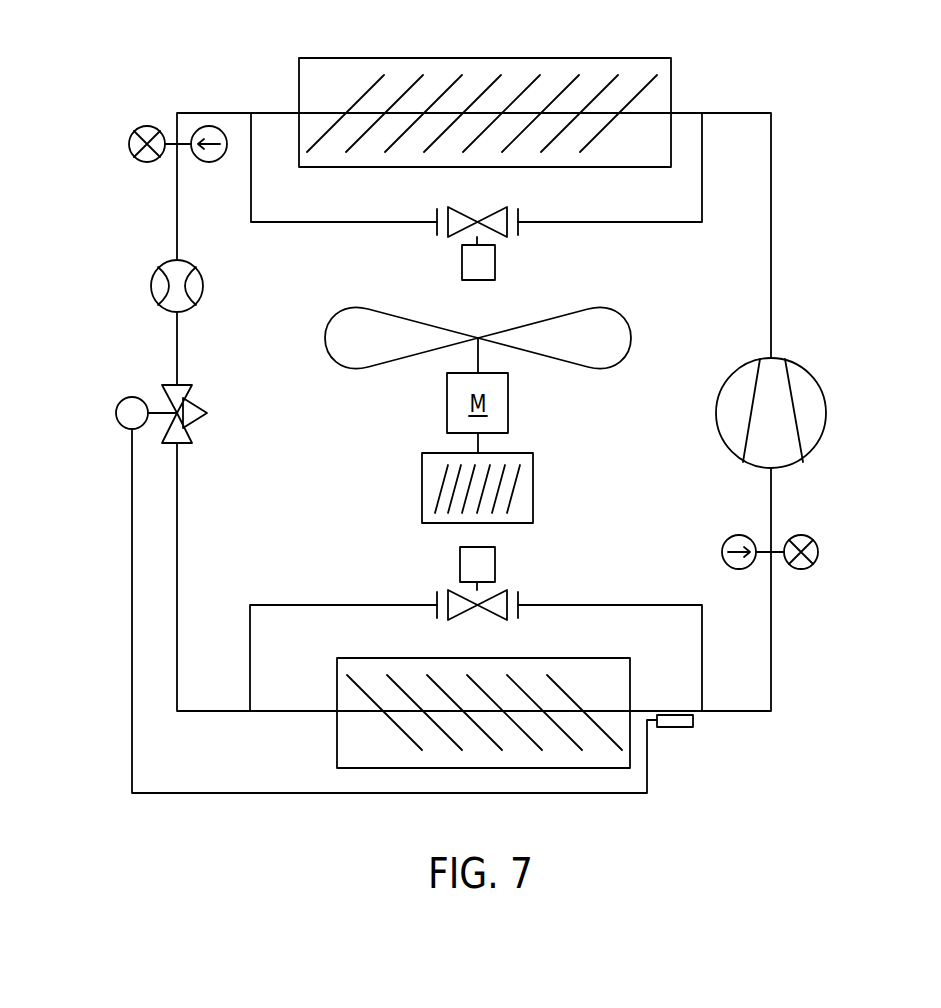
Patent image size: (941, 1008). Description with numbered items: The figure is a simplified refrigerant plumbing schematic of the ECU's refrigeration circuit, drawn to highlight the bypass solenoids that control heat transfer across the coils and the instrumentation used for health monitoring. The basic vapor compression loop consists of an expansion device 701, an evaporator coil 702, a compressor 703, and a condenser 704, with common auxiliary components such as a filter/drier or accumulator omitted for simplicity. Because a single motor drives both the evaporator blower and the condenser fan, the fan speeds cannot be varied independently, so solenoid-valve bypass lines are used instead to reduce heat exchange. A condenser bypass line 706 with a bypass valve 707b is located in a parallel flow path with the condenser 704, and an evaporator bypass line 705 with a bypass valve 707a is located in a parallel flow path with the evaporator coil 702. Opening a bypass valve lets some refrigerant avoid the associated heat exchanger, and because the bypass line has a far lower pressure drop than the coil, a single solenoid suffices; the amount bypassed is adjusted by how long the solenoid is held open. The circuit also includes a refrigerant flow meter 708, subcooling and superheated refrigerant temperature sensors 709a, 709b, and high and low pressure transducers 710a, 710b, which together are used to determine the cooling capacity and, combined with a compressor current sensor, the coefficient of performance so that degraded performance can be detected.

The expansion device 701 is at (160, 396).
The evaporator coil 702 is at (337, 757).
The compressor 703 is at (825, 428).
The condenser 704 is at (672, 73).
The evaporator bypass line 705 is at (702, 630).
The condenser bypass line 706 is at (702, 187).
The bypass valve 707a is at (495, 563).
The bypass valve 707b is at (462, 258).
The refrigerant flow meter 708 is at (152, 280).
The subcooling refrigerant temperature sensor 709a is at (205, 126).
The superheated refrigerant temperature sensor 709b is at (725, 541).
The high pressure transducer 710a is at (147, 126).
The low pressure transducer 710b is at (815, 541).